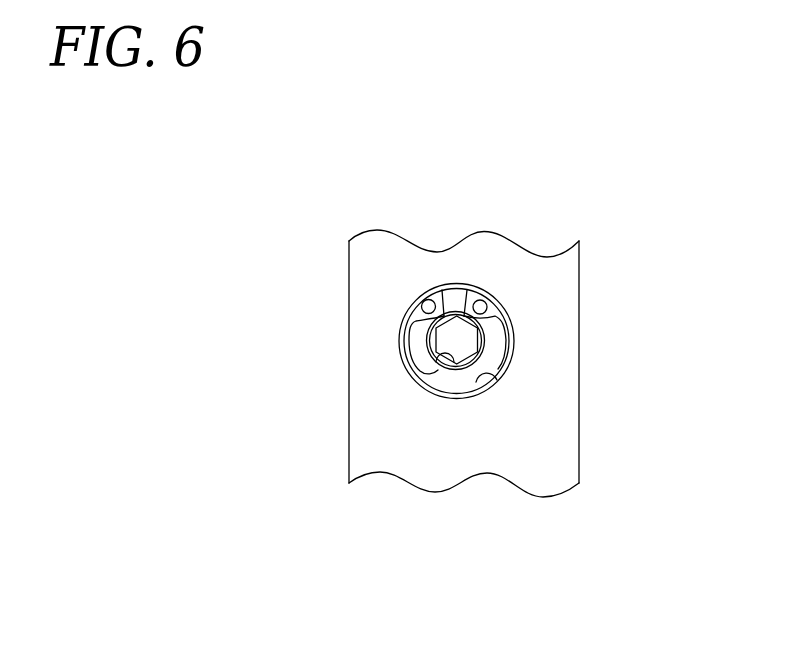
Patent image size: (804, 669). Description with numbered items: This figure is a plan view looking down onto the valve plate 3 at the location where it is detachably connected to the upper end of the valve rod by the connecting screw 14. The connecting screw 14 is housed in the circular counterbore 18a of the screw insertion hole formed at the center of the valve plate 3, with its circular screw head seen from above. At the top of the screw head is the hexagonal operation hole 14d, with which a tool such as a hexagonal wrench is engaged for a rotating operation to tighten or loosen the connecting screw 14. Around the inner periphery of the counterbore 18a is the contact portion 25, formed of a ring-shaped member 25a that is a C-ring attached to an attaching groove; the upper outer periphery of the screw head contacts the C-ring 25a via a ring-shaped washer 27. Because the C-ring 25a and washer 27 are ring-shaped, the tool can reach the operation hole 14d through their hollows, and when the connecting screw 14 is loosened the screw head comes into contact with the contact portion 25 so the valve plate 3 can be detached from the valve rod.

The valve plate 3 is at (528, 278).
The connecting screw 14 is at (455, 340).
The hexagonal operation hole 14d is at (460, 355).
The counterbore 18a is at (500, 377).
The contact portion 25 is at (341, 290).
The ring-shaped member 25a is at (415, 310).
The washer 27 is at (418, 357).